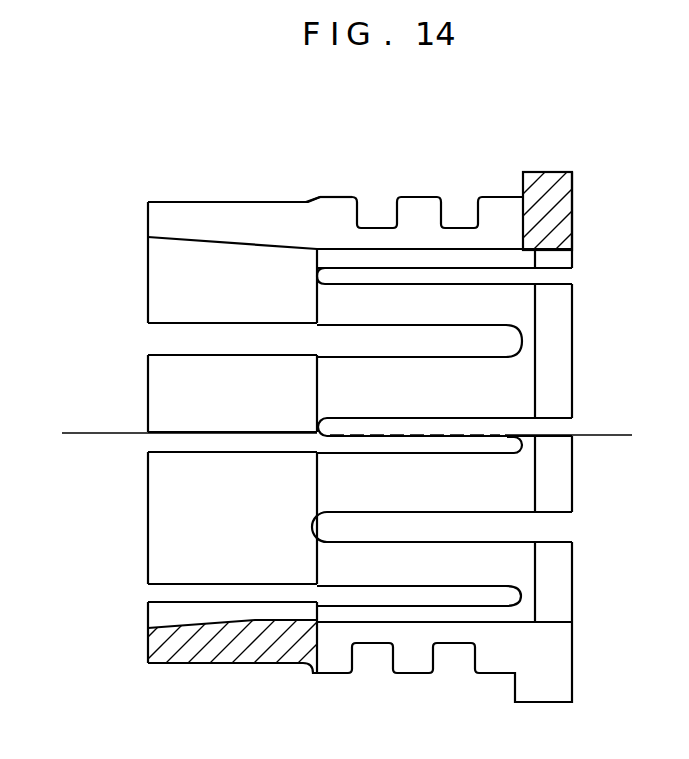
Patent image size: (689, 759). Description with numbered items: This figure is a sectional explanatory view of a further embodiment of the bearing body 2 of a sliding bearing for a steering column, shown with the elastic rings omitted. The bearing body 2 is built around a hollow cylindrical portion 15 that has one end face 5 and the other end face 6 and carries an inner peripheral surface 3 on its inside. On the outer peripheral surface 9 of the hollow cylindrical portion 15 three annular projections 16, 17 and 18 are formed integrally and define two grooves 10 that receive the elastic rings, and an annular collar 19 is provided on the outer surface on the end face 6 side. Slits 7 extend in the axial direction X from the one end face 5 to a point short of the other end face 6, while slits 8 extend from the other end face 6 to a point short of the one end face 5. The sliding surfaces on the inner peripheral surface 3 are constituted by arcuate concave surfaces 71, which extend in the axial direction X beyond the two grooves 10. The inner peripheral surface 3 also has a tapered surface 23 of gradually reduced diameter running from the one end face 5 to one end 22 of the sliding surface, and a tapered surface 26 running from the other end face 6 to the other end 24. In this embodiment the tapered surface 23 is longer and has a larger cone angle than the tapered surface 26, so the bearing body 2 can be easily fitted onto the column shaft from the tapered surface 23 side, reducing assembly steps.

The bearing body 2 is at (240, 185).
The inner peripheral surface 3 is at (163, 560).
The one end face 5 is at (147, 480).
The other end face 6 is at (572, 487).
The slits 7 is at (408, 237).
The slits 8 is at (512, 276).
The outer peripheral surface 9 is at (337, 198).
The grooves 10 is at (455, 222).
The hollow cylindrical portion 15 is at (255, 650).
The annular projection 16 is at (335, 215).
The annular projection 17 is at (423, 207).
The annular projection 18 is at (493, 213).
The annular collar 19 is at (550, 183).
The one end of the flat surface 22 is at (317, 383).
The tapered surface 23 is at (215, 243).
The other end of the flat surface 24 is at (534, 360).
The tapered surface 26 is at (548, 254).
The arcuate concave surfaces 71 is at (373, 257).
The axial direction X is at (85, 432).